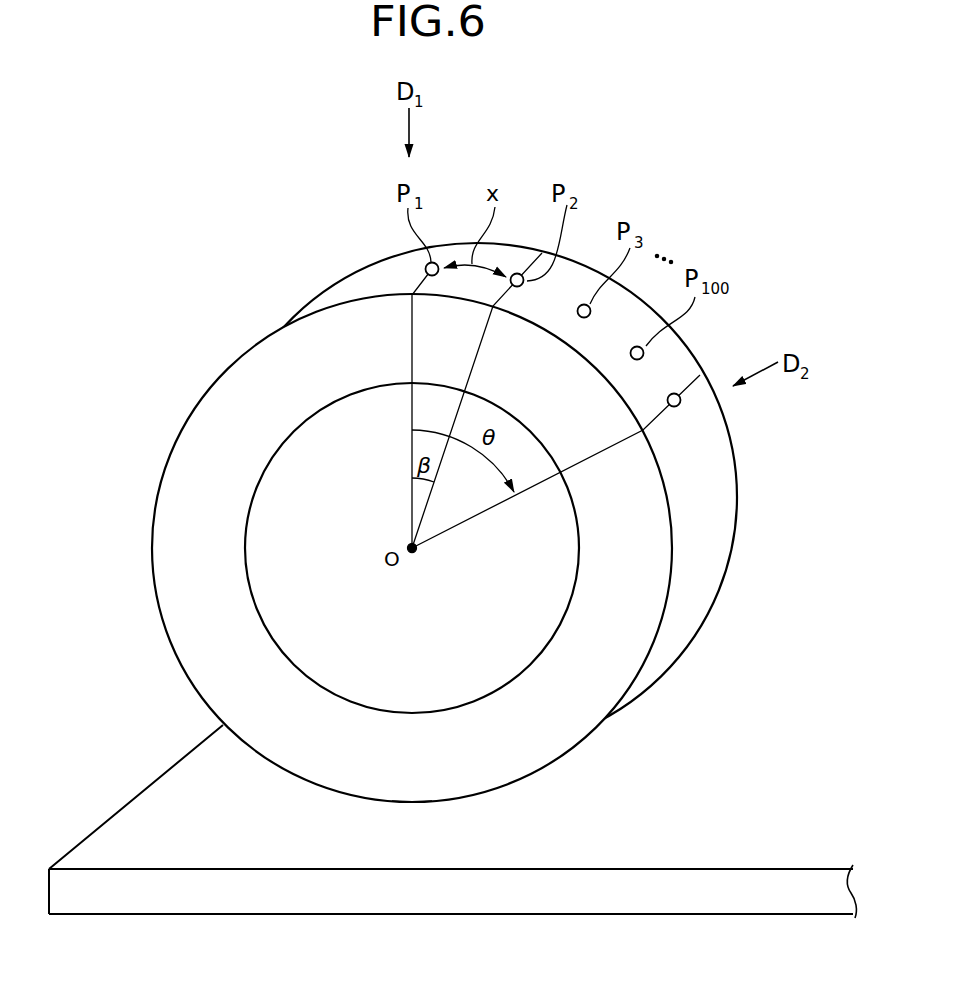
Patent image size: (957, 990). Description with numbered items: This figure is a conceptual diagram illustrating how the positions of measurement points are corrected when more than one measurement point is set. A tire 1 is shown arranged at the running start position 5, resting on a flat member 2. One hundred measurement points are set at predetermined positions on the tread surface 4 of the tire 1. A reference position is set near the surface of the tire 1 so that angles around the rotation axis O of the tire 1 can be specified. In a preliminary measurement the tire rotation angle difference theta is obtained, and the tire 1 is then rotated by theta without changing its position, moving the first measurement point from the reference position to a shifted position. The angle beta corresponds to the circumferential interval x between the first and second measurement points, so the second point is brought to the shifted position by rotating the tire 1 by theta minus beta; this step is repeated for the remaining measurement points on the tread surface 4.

The tire 1 is at (151, 541).
The flat plate 2 is at (128, 818).
The tread surface 4 is at (363, 282).
The running start position 5 is at (398, 813).